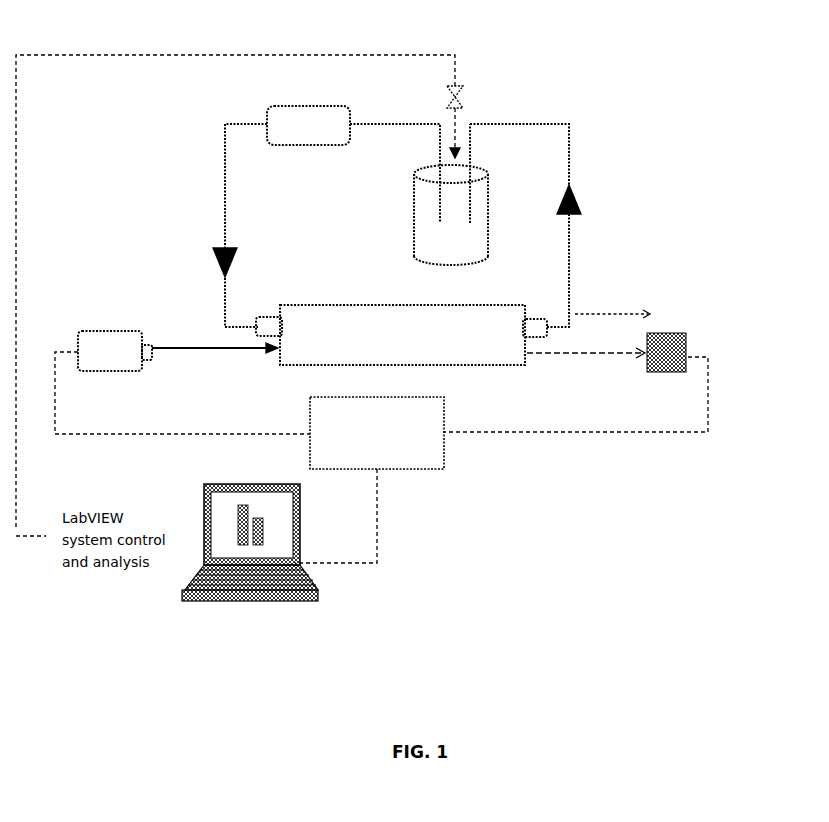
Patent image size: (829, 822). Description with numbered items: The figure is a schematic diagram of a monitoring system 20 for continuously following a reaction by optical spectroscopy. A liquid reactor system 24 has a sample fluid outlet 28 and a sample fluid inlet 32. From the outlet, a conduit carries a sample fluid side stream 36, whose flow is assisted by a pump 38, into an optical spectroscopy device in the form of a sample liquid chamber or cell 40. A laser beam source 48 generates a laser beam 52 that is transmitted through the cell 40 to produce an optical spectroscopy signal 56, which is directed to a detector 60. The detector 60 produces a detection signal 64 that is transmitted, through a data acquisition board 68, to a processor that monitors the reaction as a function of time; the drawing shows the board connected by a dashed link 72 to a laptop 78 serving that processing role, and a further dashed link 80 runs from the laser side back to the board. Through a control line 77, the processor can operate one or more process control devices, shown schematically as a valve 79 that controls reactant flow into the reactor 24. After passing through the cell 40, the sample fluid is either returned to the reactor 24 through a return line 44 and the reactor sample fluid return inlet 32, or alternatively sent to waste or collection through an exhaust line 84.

The monitoring system 20 is at (639, 170).
The liquid reactor system 24 is at (489, 179).
The sample fluid outlet 28 is at (432, 205).
The sample fluid inlet 32 is at (472, 210).
The sample fluid side stream 36 is at (222, 180).
The pump 38 is at (312, 106).
The sample liquid chamber or cell 40 is at (318, 303).
The return line 44 is at (571, 291).
The laser beam source 48 is at (93, 331).
The laser beam 52 is at (200, 347).
The optical spectroscopy signal 56 is at (537, 353).
The detector 60 is at (688, 338).
The detection signal 64 is at (606, 434).
The data acquisition board 68 is at (445, 447).
The data line to laptop 72 is at (378, 542).
The control line 77 is at (240, 54).
The laptop 78 is at (320, 598).
The valve 79 is at (464, 97).
The laser control line 80 is at (121, 435).
The exhaust line 84 is at (617, 313).